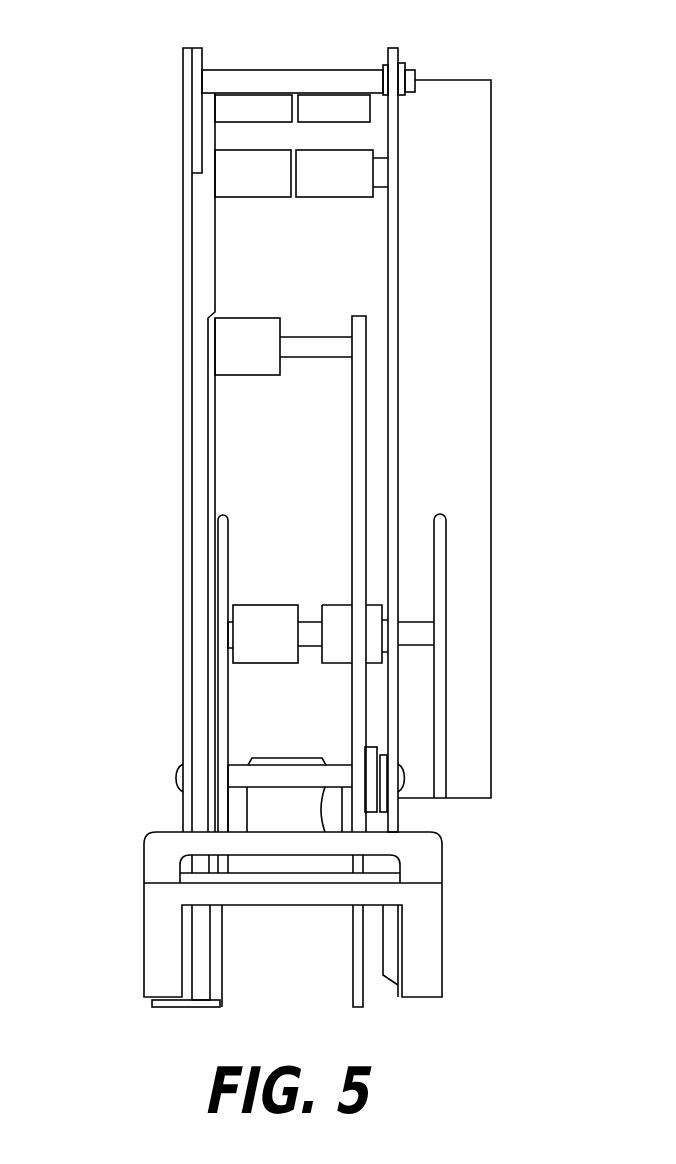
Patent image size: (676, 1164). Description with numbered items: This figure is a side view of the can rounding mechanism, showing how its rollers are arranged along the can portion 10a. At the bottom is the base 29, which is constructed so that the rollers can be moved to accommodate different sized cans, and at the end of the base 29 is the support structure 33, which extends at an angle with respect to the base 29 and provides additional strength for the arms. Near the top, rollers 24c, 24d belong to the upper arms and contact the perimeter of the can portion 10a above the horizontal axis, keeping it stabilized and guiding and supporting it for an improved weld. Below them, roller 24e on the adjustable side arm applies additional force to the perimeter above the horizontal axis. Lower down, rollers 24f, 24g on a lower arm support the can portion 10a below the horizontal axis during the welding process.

The roller 24c is at (323, 113).
The roller 24d is at (247, 178).
The roller 24e is at (233, 345).
The roller 24f is at (245, 640).
The roller 24g is at (336, 778).
The can portion 10a is at (455, 452).
The base 29 is at (162, 863).
The support structure 33 is at (423, 938).